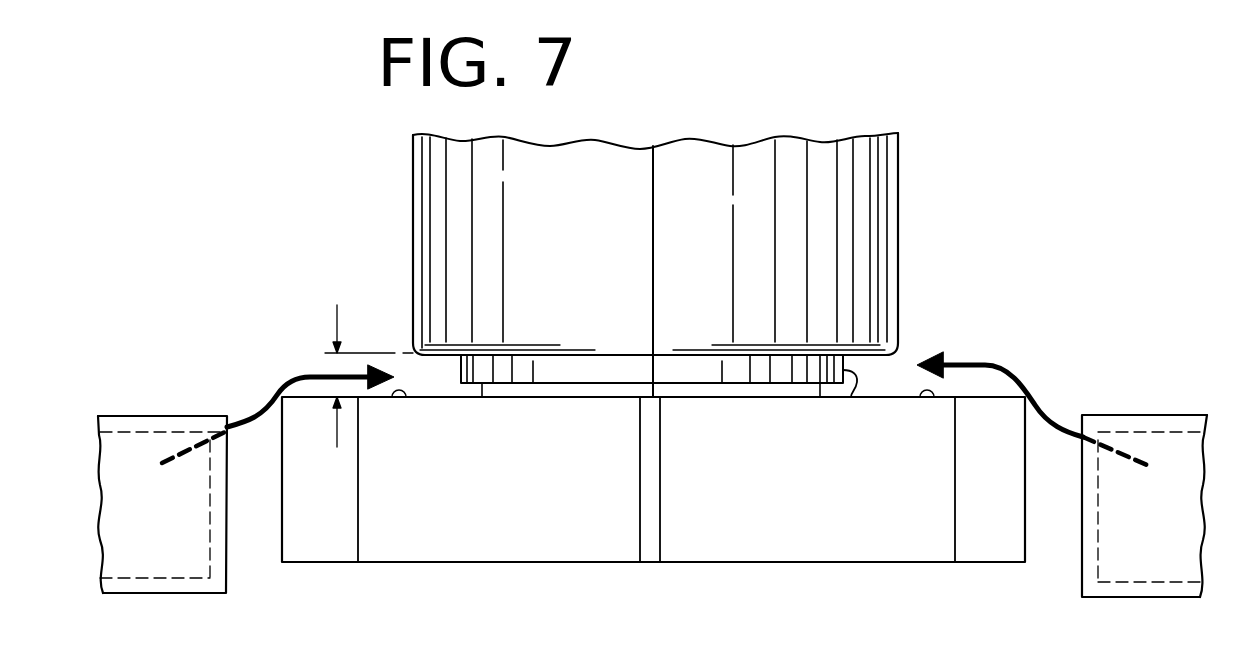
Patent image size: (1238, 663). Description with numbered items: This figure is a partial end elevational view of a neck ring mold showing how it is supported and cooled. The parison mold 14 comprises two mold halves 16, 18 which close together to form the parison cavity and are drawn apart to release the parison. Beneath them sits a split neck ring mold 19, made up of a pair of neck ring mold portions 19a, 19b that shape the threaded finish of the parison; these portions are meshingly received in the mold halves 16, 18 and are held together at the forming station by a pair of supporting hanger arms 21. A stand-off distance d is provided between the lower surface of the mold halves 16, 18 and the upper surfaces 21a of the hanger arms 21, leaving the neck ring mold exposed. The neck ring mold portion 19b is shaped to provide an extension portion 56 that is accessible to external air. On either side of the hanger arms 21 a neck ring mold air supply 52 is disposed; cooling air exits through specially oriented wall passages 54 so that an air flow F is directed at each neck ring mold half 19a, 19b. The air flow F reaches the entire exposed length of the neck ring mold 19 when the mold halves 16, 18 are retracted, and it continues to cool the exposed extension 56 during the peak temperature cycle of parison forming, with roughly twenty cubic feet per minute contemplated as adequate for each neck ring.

The parison mold 14 is at (654, 146).
The mold half 16 is at (412, 185).
The mold half 18 is at (898, 198).
The neck ring mold 19 is at (459, 367).
The neck ring mold portion 19a is at (592, 368).
The neck ring mold portion 19b is at (709, 370).
The supporting hanger arm 21 is at (453, 563).
The upper surface of hanger arm 21a is at (399, 397).
The neck ring mold air supply 52 is at (153, 416).
The wall passage 54 is at (237, 424).
The extension portion 56 is at (851, 397).
The air flow F is at (303, 377).
The stand-off distance d is at (369, 365).